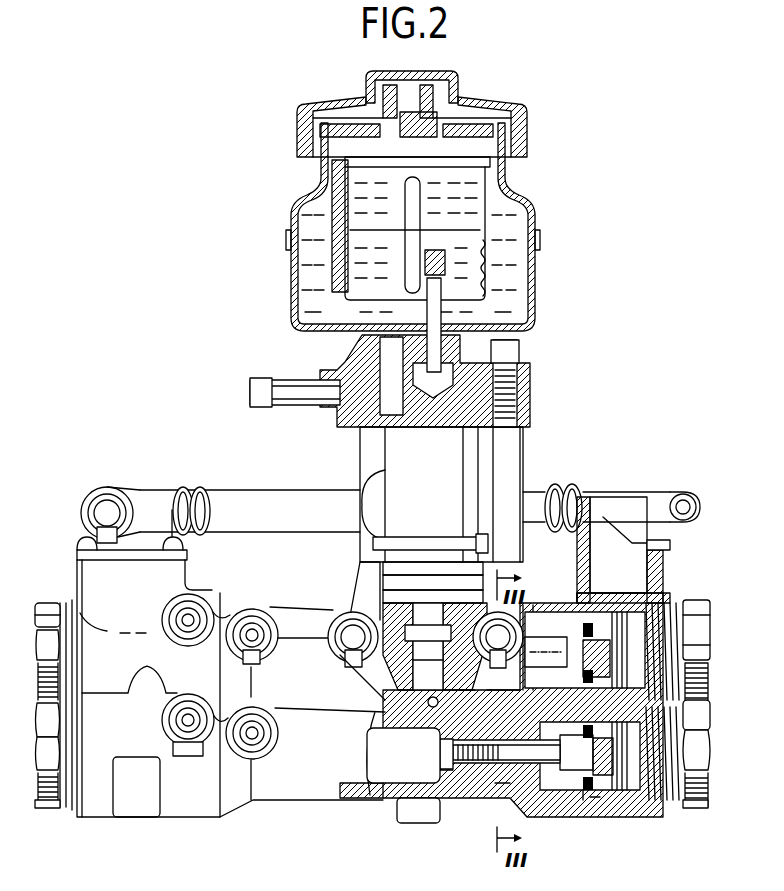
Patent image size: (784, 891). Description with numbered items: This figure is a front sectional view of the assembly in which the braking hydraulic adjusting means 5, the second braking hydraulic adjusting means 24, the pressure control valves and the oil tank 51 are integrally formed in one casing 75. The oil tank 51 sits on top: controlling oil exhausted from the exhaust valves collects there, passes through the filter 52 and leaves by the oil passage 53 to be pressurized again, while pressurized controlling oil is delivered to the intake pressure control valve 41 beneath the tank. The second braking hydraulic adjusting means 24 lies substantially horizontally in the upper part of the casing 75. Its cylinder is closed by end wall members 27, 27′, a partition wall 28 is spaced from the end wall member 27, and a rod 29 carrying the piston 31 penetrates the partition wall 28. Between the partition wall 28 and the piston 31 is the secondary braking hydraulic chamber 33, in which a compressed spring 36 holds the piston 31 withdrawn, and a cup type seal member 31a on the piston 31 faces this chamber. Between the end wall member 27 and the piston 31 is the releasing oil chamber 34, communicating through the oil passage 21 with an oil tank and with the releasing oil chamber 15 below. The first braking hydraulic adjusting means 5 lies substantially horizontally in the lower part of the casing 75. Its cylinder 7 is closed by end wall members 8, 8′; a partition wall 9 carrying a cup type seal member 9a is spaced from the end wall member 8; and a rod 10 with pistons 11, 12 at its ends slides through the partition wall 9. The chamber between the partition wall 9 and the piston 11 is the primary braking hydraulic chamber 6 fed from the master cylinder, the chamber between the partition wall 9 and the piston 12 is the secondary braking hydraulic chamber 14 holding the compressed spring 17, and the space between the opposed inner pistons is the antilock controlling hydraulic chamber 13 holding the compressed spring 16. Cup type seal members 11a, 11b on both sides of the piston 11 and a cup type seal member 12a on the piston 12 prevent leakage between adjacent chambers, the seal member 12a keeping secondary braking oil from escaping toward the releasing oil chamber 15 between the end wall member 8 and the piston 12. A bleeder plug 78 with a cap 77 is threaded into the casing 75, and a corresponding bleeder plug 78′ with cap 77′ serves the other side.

The oil tank 51 is at (527, 182).
The filter 52 is at (481, 262).
The oil passage 53 is at (307, 392).
The intake pressure control valve 41 is at (438, 478).
The oil passage 21 is at (696, 493).
The end wall member 27′ is at (43, 603).
The end wall member 8′ is at (50, 809).
The casing 75 is at (320, 801).
The cap 77′ is at (345, 620).
The bleeder plug 78′ is at (338, 645).
The cap 77 is at (480, 634).
The bleeder plug 78 is at (488, 656).
The cup type seal member 11a is at (437, 703).
The cup type seal member 9a is at (472, 693).
The partition wall 28 is at (494, 689).
The rod 29 is at (547, 640).
The secondary braking hydraulic chamber 33 is at (568, 637).
The compressed spring 36 is at (593, 603).
The cup type seal member 31a is at (620, 612).
The piston 31 is at (600, 648).
The releasing oil chamber 34 is at (602, 665).
The end wall member 27 is at (673, 606).
The second braking hydraulic adjusting means 24 is at (712, 630).
The braking hydraulic adjusting means 5 is at (711, 730).
The end wall member 8 is at (680, 808).
The piston 12 is at (602, 750).
The secondary braking hydraulic chamber 14 is at (556, 775).
The releasing oil chamber 15 is at (603, 773).
The compressed spring 17 is at (583, 792).
The cup type seal member 12a is at (590, 798).
The partition wall 9 is at (512, 762).
The rod 10 is at (470, 770).
The piston 11 is at (449, 772).
The cup type seal member 11b is at (460, 797).
The primary braking hydraulic chamber 6 is at (498, 790).
The antilock controlling hydraulic chamber 13 is at (411, 765).
The compressed spring 16 is at (372, 785).
The cylinder 7 is at (393, 785).